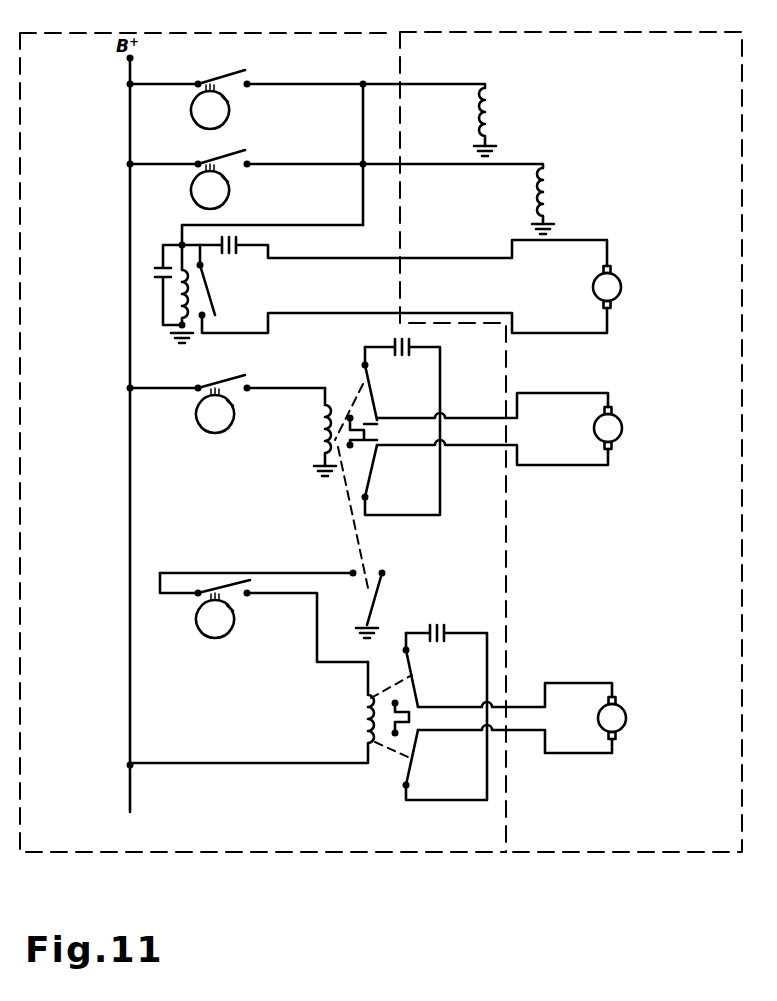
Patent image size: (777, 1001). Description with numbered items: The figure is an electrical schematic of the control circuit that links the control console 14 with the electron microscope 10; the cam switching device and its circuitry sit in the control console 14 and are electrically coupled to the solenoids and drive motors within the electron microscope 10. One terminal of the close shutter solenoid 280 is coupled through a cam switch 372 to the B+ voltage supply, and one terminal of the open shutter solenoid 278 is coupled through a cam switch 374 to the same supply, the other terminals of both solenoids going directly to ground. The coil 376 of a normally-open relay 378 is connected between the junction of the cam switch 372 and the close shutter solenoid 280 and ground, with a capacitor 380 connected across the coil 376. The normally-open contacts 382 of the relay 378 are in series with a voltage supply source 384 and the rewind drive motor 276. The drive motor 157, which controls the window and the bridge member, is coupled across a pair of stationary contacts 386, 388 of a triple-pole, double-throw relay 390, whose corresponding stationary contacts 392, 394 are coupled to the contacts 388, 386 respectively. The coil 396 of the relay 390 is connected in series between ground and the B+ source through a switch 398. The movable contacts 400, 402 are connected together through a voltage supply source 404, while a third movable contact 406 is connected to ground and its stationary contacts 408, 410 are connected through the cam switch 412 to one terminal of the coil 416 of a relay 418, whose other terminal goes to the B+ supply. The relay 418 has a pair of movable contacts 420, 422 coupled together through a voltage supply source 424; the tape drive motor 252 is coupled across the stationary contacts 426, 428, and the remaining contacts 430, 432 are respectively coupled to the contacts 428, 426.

The control console 14 is at (348, 32).
The electron microscope 10 is at (402, 34).
The cam switch 372 is at (252, 66).
The cam switch 374 is at (258, 148).
The close shutter solenoid 280 is at (497, 118).
The open shutter solenoid 278 is at (526, 199).
The normally-open relay 378 is at (188, 247).
The relay coil 376 is at (176, 300).
The capacitor 380 is at (150, 277).
The normally-open contacts 382 is at (216, 284).
The voltage supply source 384 is at (236, 242).
The rewind drive motor 276 is at (643, 296).
The switch 398 is at (222, 378).
The relay coil 396 is at (318, 437).
The triple-pole, double-throw relay 390 is at (343, 378).
The stationary contact 392 is at (352, 402).
The stationary contact 394 is at (358, 462).
The movable contact 400 is at (370, 370).
The voltage supply source 404 is at (432, 348).
The movable contact 402 is at (372, 498).
The stationary contact 386 is at (378, 419).
The stationary contact 388 is at (382, 455).
The drive motor 157 is at (659, 426).
The cam switch 412 is at (219, 586).
The stationary contact 408 is at (352, 570).
The stationary contact 410 is at (386, 574).
The third movable contact 406 is at (376, 623).
The relay coil 416 is at (366, 727).
The contact 430 is at (395, 702).
The contact 432 is at (397, 737).
The relay 418 is at (388, 792).
The movable contact 420 is at (410, 653).
The voltage supply source 424 is at (445, 631).
The movable contact 422 is at (411, 786).
The stationary contact 426 is at (419, 707).
The stationary contact 428 is at (418, 736).
The tape drive motor 252 is at (644, 720).